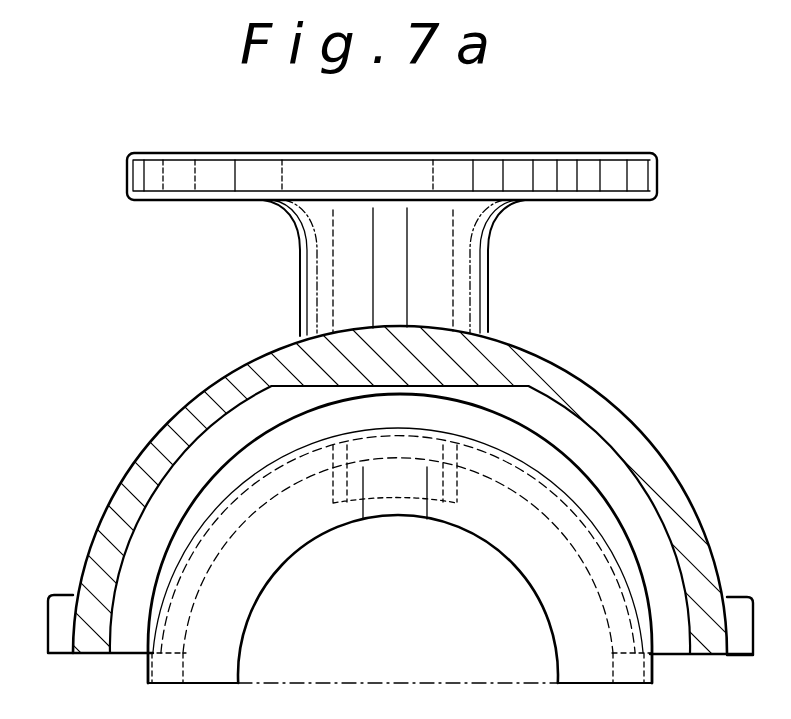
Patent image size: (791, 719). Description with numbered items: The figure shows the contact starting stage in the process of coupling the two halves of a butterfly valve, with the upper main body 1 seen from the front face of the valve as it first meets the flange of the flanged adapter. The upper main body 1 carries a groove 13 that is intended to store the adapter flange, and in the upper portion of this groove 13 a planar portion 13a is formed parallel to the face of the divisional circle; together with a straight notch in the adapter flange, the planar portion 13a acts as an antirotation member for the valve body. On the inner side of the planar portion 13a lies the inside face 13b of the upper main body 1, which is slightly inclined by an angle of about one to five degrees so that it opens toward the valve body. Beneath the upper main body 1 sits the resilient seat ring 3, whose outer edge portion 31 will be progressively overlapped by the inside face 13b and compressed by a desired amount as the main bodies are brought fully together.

The upper main body 1 is at (681, 435).
The resilient seat ring 3 is at (530, 590).
The groove 13 is at (122, 533).
The planar portion 13a is at (258, 392).
The inside face 13b is at (523, 442).
The outer edge portion 31 is at (652, 678).